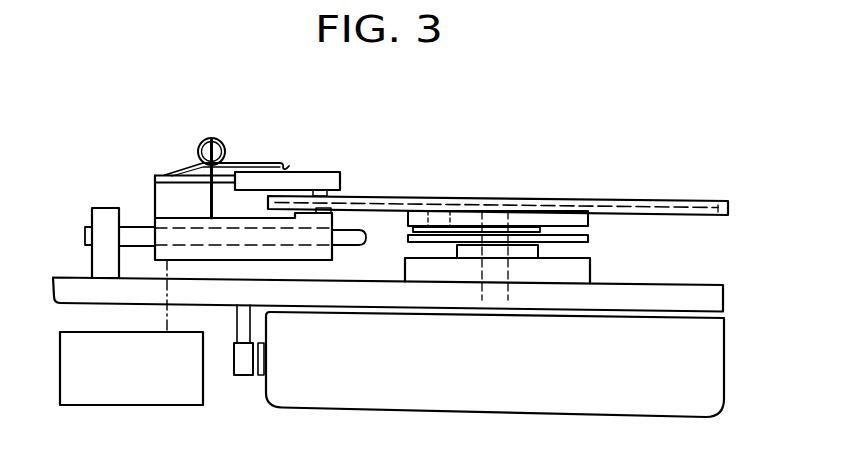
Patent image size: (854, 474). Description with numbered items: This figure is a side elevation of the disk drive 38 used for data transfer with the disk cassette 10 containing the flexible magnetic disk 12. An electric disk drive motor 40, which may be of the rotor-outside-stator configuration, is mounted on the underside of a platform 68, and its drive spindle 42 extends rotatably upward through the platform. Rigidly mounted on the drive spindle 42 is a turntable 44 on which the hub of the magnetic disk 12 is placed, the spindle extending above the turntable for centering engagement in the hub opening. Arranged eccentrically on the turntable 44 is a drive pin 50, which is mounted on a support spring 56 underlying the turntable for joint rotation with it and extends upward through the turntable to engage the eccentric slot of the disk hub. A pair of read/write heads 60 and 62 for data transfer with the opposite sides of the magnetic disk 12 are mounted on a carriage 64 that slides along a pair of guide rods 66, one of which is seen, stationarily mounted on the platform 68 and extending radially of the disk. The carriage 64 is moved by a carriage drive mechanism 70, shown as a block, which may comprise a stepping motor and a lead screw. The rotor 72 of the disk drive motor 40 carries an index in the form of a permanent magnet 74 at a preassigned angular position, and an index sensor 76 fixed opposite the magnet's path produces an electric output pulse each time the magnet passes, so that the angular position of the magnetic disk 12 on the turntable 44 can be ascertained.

The disk drive 38 is at (57, 155).
The guide rods 66 is at (110, 207).
The carriage 64 is at (333, 259).
The read/write head 60 is at (340, 190).
The read/write head 62 is at (333, 210).
The disk cassette 10 is at (612, 190).
The flexible magnetic disk 12 is at (542, 197).
The turntable 44 is at (583, 220).
The drive pin 50 is at (435, 217).
The drive spindle 42 is at (490, 213).
The support spring 56 is at (541, 230).
The platform 68 is at (693, 290).
The disk drive motor 40 is at (742, 331).
The rotor 72 is at (555, 409).
The index sensor 76 is at (236, 376).
The permanent magnet 74 is at (260, 376).
The carriage drive mechanism 70 is at (165, 406).